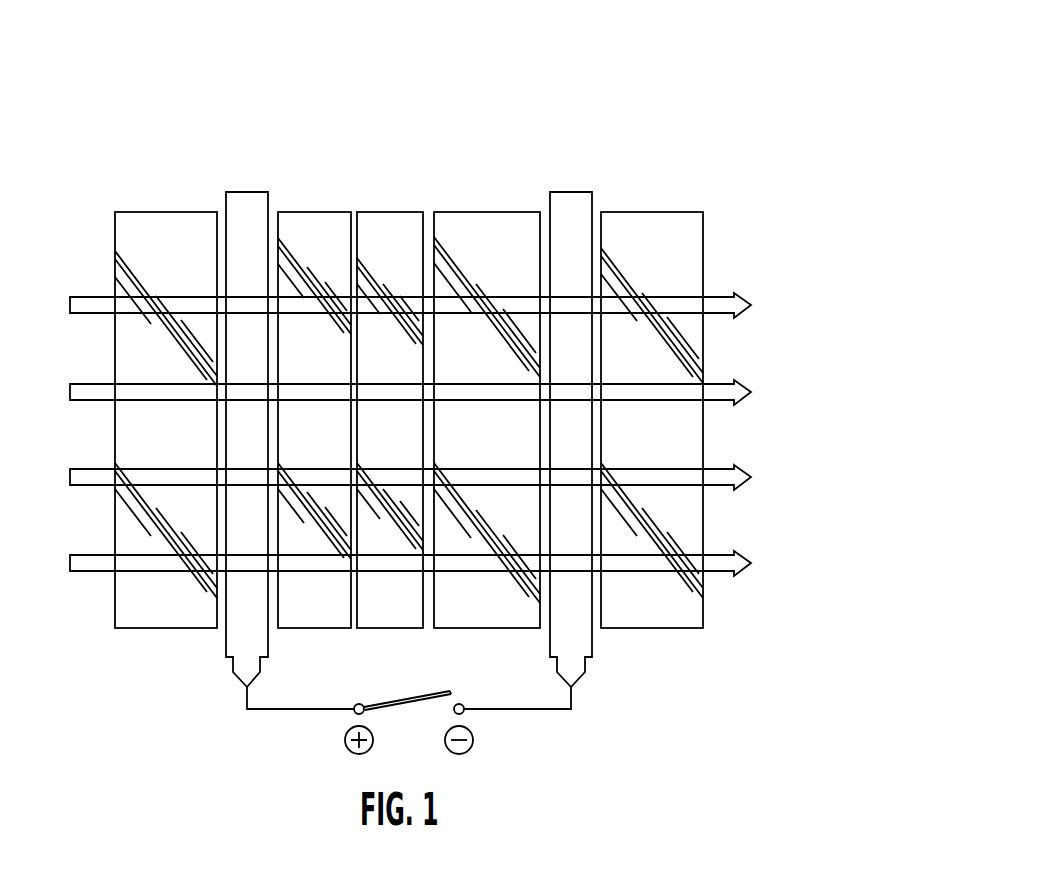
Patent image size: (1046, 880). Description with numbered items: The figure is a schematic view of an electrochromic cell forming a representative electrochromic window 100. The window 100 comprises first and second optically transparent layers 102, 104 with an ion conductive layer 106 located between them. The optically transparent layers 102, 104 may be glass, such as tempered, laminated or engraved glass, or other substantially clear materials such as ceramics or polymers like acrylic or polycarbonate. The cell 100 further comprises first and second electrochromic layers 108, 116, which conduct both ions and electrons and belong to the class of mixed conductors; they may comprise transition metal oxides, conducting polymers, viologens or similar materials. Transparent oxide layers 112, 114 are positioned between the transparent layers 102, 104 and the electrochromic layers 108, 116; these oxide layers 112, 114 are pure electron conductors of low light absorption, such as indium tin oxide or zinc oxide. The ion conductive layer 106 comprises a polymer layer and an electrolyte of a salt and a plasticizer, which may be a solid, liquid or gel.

The electrochromic window 100 is at (412, 379).
The first optically transparent layer 102 is at (708, 174).
The second optically transparent layer 104 is at (165, 194).
The ion conductive layer 106 is at (401, 197).
The first electrochromic layer 108 is at (501, 197).
The transparent oxide layer 112 is at (581, 174).
The transparent oxide layer 114 is at (251, 175).
The second electrochromic layer 116 is at (320, 192).